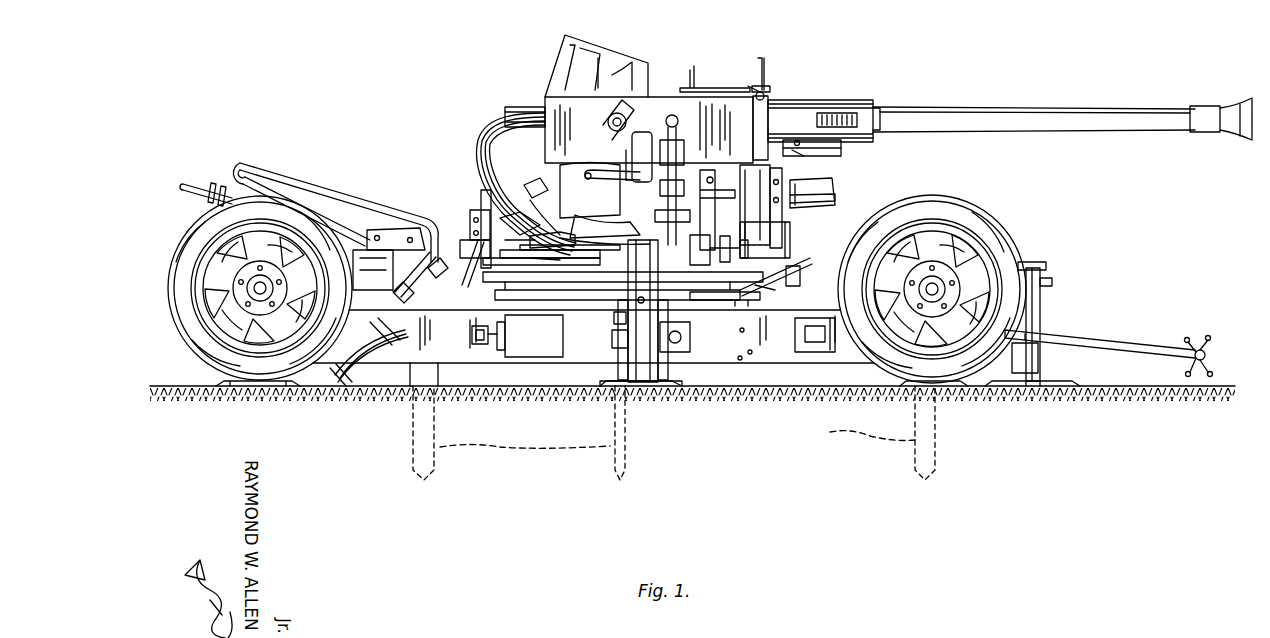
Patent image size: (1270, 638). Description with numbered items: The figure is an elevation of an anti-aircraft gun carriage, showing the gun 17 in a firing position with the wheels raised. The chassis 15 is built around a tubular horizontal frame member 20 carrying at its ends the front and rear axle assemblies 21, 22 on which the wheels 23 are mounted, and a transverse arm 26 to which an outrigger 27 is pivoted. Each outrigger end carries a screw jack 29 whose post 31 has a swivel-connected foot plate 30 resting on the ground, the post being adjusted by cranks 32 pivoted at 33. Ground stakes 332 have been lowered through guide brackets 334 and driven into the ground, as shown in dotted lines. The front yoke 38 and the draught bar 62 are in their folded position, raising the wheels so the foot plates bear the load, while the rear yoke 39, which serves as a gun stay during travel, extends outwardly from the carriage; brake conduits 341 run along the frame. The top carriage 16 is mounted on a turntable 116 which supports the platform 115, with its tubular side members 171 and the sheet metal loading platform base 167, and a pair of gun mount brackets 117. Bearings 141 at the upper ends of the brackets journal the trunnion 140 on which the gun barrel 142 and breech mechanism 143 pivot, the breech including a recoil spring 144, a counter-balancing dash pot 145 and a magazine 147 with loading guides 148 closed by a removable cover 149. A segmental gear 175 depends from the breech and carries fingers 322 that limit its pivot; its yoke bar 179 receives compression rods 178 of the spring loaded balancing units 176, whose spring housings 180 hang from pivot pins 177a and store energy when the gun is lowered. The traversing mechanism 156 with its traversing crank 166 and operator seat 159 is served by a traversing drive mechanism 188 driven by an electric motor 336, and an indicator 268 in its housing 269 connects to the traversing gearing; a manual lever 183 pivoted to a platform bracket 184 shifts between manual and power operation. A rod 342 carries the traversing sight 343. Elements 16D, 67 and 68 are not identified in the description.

The chassis 15 is at (785, 291).
The top carriage 16 is at (803, 221).
The traversing arm 16D is at (803, 255).
The gun 17 is at (927, 88).
The tubular horizontal frame member 20 is at (752, 353).
The front axle assembly 21 is at (258, 290).
The rear axle assembly 22 is at (934, 288).
The wheels 23 is at (195, 230).
The transverse arm 26 is at (668, 352).
The outrigger 27 is at (670, 388).
The screw jack 29 is at (626, 348).
The foot plate 30 is at (236, 388).
The post 31 is at (628, 380).
The cranks 32 is at (1042, 276).
The crank pivot 33 is at (1036, 262).
The yoke 38 is at (362, 232).
The yoke 39 is at (1102, 336).
The draught bar 62 is at (229, 181).
The pivot pin 67 is at (800, 146).
The hand wheel 68 is at (1207, 340).
The top carriage frame platform 115 is at (483, 291).
The turntable 116 is at (686, 314).
The gun mount brackets 117 is at (630, 156).
The trunnion 140 is at (616, 110).
The bearings 141 is at (602, 120).
The gun barrel 142 is at (1003, 106).
The breech mechanism 143 is at (768, 110).
The recoil spring 144 is at (830, 112).
The counter-balancing dash pot 145 is at (845, 148).
The magazine 147 is at (666, 96).
The loading guides 148 is at (592, 64).
The removable cover 149 is at (602, 64).
The traversing mechanism 156 is at (695, 261).
The operator seat 159 is at (525, 183).
The traversing crank 166 is at (687, 102).
The loading platform base 167 is at (465, 261).
The tubular side members 171 is at (507, 275).
The segmental gear 175 is at (587, 207).
The spring loaded balancing units 176 is at (843, 189).
The pivot pins 177a is at (709, 172).
The compression rods 178 is at (590, 191).
The yoke bar 179 is at (612, 170).
The spring housings 180 is at (825, 198).
The manual lever 183 is at (471, 245).
The platform bracket 184 is at (468, 231).
The traversing drive mechanism 188 is at (782, 165).
The indicator 268 is at (529, 225).
The housing 269 is at (542, 275).
The fingers 322 is at (523, 169).
The ground stakes 332 is at (687, 433).
The guide brackets 334 is at (615, 313).
The electric motor 336 is at (765, 237).
The conduits 341 is at (358, 331).
The rod 342 is at (768, 92).
The traversing sight 343 is at (766, 56).